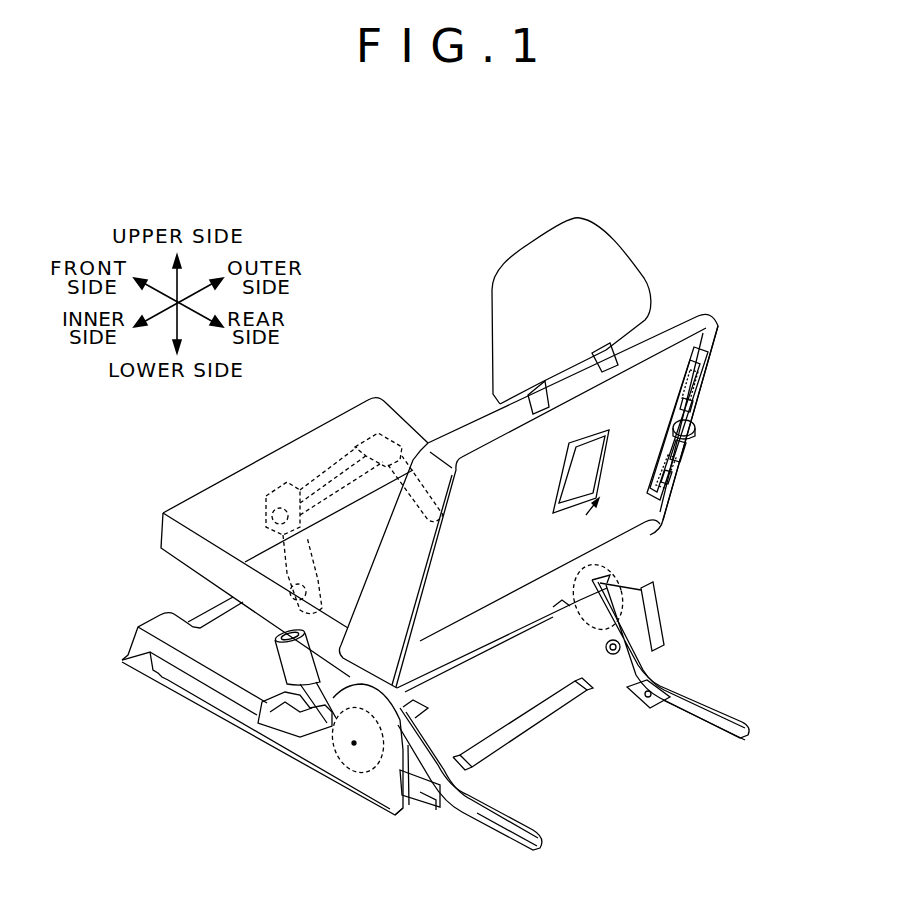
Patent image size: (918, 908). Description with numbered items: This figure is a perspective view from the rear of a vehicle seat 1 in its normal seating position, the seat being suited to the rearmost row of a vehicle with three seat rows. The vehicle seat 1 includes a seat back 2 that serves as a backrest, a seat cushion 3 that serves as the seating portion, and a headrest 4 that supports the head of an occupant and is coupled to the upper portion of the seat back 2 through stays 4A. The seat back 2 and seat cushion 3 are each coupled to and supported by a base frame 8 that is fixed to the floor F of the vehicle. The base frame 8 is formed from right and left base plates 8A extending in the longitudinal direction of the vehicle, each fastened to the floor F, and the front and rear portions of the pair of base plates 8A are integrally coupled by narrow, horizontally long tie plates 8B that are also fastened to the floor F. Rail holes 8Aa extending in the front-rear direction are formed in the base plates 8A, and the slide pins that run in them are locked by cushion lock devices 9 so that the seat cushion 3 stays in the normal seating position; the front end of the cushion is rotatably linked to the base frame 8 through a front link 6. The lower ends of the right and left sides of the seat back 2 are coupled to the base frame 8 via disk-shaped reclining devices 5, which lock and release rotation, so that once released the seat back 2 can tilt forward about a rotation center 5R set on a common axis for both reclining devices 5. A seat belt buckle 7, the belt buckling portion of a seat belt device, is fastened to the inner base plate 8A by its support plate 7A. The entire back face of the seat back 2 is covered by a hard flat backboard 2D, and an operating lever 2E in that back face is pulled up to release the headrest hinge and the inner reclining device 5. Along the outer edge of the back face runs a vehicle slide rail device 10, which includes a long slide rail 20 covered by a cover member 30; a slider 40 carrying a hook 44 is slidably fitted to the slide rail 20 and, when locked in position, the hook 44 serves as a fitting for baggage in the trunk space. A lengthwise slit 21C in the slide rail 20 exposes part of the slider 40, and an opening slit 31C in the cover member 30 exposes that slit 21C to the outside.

The vehicle seat 1 is at (376, 340).
The seat back 2 is at (471, 431).
The backboard 2D is at (684, 357).
The operating lever 2E is at (582, 466).
The seat cushion 3 is at (228, 492).
The headrest 4 is at (611, 266).
The stays 4A is at (594, 353).
The reclining device 5 is at (337, 745).
The rotation center 5R is at (353, 746).
The front link 6 is at (287, 547).
The seat belt buckle 7 is at (284, 652).
The support plate 7A is at (312, 693).
The base frame 8 is at (687, 632).
The base plate 8A is at (425, 738).
The rail hole 8Aa is at (465, 812).
The tie plate 8B is at (562, 695).
The cushion lock device 9 is at (413, 710).
The vehicle slide rail device 10 is at (710, 363).
The slide rail 20 is at (700, 378).
The cover member 30 is at (705, 397).
The slider 40 is at (695, 420).
The hook 44 is at (697, 436).
The slit 21C is at (672, 462).
The opening slit 31C is at (748, 477).
The floor F is at (585, 757).